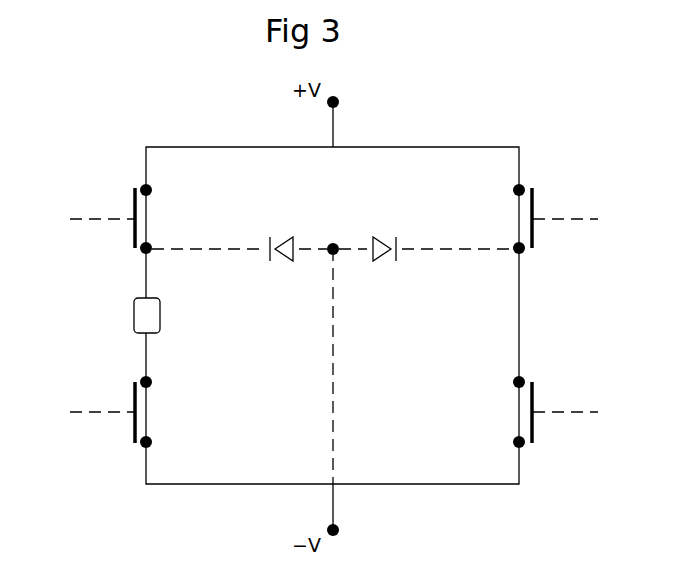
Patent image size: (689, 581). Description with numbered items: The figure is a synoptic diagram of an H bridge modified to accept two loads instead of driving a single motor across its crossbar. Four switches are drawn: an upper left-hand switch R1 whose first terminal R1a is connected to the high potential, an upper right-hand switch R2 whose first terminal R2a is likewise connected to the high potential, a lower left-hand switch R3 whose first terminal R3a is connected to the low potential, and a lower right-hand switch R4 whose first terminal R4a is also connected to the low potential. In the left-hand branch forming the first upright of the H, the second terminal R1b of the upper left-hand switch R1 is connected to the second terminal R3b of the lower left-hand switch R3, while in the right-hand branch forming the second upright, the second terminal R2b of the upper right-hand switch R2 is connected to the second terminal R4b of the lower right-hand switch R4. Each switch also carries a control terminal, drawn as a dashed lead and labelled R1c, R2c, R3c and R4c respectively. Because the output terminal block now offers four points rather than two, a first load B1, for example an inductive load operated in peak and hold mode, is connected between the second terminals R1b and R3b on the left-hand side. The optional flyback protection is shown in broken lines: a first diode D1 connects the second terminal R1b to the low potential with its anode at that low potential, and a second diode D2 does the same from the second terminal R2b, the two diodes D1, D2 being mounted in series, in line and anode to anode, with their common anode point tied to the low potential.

The upper left-hand switch R1 is at (158, 218).
The first terminal of the upper left-hand switch R1a is at (140, 188).
The second terminal of the upper left-hand switch R1b is at (142, 252).
The first transistor base terminal R1c is at (92, 221).
The upper right-hand switch R2 is at (507, 218).
The first terminal of the upper right-hand switch R2a is at (525, 188).
The second terminal of the upper right-hand switch R2b is at (524, 252).
The second transistor base terminal R2c is at (575, 221).
The lower left-hand switch R3 is at (158, 412).
The first terminal of the lower left-hand switch R3a is at (142, 447).
The second terminal of the lower left-hand switch R3b is at (142, 381).
The third transistor base terminal R3c is at (92, 412).
The lower right-hand switch R4 is at (507, 412).
The first terminal of the lower right-hand switch R4a is at (524, 447).
The second terminal of the lower right-hand switch R4b is at (523, 381).
The fourth transistor base terminal R4c is at (573, 412).
The first diode D1 is at (283, 258).
The second diode D2 is at (383, 258).
The first load B1 is at (160, 315).